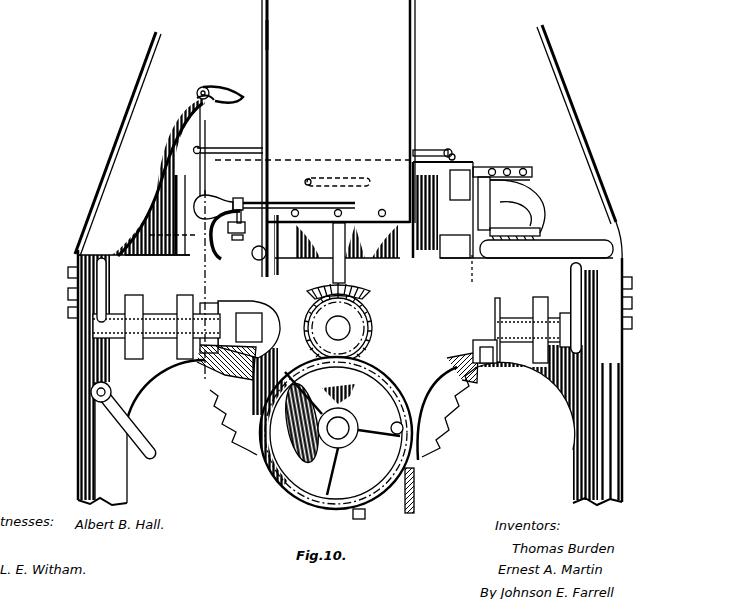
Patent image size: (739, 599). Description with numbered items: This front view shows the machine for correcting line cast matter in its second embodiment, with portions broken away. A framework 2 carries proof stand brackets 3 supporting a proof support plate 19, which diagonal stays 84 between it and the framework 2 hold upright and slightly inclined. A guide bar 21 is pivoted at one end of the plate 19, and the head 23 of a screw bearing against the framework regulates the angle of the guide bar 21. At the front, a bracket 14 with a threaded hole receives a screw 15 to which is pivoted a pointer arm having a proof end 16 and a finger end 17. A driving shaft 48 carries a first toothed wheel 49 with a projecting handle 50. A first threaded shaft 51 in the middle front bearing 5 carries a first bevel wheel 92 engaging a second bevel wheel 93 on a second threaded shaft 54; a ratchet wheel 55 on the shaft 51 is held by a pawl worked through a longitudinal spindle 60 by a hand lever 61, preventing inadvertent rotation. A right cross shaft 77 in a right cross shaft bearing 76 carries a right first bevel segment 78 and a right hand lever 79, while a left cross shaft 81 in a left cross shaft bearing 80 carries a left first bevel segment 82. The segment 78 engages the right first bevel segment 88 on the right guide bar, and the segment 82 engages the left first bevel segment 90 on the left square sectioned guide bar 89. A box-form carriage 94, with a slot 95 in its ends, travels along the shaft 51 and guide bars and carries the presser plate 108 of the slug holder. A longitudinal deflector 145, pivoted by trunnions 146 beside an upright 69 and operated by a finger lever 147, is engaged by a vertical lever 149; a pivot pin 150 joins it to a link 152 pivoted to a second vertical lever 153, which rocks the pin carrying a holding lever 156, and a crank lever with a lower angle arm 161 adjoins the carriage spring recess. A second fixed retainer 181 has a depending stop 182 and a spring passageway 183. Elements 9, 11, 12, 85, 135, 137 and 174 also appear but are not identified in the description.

The framework 2 is at (350, 377).
The proof stand brackets 3 is at (473, 258).
The middle front bearing 5 is at (337, 290).
The bracket 9 is at (624, 256).
The plate 11 is at (540, 260).
The bar 12 is at (588, 245).
The bracket 14 is at (220, 220).
The screw 15 is at (236, 244).
The proof end 16 is at (352, 205).
The finger end 17 is at (195, 208).
The plate 19 is at (315, 138).
The guide bar 21 is at (262, 32).
The head 23 is at (258, 260).
The driving shaft 48 is at (340, 430).
The first toothed wheel 49 is at (295, 476).
The handle 50 is at (402, 432).
The first threaded shaft 51 is at (336, 330).
The second threaded shaft 54 is at (336, 248).
The ratchet wheel 55 is at (437, 413).
The longitudinal spindle 60 is at (90, 392).
The hand lever 61 is at (125, 428).
The upright 69 is at (178, 128).
The right cross shaft bearing 76 is at (541, 365).
The right cross shaft 77 is at (526, 330).
The right first bevel segment 78 is at (477, 376).
The right hand lever 79 is at (582, 275).
The left cross shaft bearing 80 is at (205, 365).
The left cross shaft 81 is at (156, 327).
The left first bevel segment 82 is at (212, 386).
The diagonal stays 84 is at (147, 57).
The slot 85 is at (100, 295).
The right first bevel segment 88 is at (442, 378).
The left square sectioned guide bar 89 is at (249, 329).
The left first bevel segment 90 is at (233, 380).
The first bevel wheel 92 is at (368, 318).
The second bevel wheel 93 is at (352, 290).
The carriage 94 is at (443, 210).
The slot 95 is at (339, 178).
The presser plate 108 is at (457, 245).
The plate 135 is at (533, 177).
The bracket 137 is at (457, 196).
The longitudinal deflector 145 is at (197, 98).
The trunnions 146 is at (210, 92).
The finger lever 147 is at (223, 108).
The vertical lever 149 is at (198, 143).
The pivot pin 150 is at (199, 150).
The link 152 is at (200, 157).
The second vertical lever 153 is at (455, 155).
The holding lever 156 is at (508, 172).
The lower angle arm 161 is at (493, 169).
The pin 174 is at (307, 180).
The second fixed retainer 181 is at (540, 186).
The depending stop 182 is at (542, 234).
The spring passageway 183 is at (530, 196).